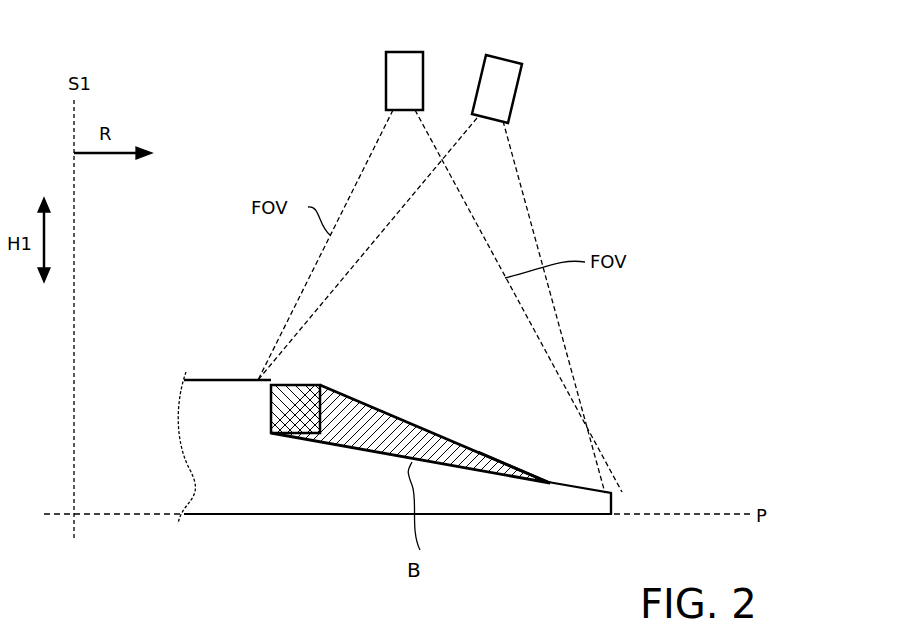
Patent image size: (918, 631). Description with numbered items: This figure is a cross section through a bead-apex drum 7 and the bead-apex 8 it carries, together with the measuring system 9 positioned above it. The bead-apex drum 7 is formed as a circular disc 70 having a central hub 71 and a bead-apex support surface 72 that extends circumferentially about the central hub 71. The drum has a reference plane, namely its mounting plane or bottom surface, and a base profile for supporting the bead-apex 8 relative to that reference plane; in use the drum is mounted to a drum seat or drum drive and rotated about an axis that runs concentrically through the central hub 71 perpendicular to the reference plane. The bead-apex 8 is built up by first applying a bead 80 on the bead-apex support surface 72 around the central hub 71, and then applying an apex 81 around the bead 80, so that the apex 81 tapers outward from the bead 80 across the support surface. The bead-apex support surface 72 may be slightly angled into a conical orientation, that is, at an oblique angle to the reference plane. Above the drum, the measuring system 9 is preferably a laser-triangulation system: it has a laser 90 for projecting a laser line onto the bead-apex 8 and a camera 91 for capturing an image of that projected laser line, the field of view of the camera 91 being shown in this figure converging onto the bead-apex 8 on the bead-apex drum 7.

The measuring system 9 is at (553, 62).
The laser 90 is at (502, 85).
The camera 91 is at (411, 80).
The bead-apex drum 7 is at (394, 447).
The circular disc 70 is at (293, 490).
The central hub 71 is at (222, 395).
The bead-apex support surface 72 is at (580, 490).
The bead-apex 8 is at (423, 420).
The bead 80 is at (310, 388).
The apex 81 is at (478, 452).